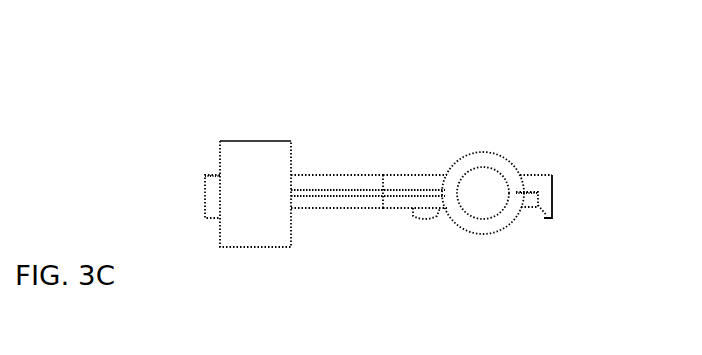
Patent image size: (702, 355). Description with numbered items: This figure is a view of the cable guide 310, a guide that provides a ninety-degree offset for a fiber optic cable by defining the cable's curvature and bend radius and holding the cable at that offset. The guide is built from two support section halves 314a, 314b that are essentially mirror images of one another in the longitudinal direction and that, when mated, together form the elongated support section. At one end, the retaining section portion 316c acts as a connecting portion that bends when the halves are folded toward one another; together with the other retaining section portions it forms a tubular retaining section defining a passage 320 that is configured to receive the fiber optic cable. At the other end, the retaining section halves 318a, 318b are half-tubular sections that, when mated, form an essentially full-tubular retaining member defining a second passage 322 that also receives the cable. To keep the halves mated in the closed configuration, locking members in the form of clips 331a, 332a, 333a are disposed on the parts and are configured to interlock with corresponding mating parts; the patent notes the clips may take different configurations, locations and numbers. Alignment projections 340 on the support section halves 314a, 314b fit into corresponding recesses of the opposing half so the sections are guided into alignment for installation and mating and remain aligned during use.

The cable guide 310 is at (392, 180).
The passage 320 is at (212, 168).
The retaining section portion (connecting portion) 316c is at (250, 182).
The clip 331a is at (215, 215).
The support section half 314a is at (345, 183).
The support section half 314b is at (400, 197).
The alignment projections 340 is at (298, 193).
The clip 332a is at (430, 215).
The retaining section half 318a is at (493, 158).
The retaining section half 318b is at (468, 227).
The passage 322 is at (483, 193).
The clip 333a is at (549, 218).